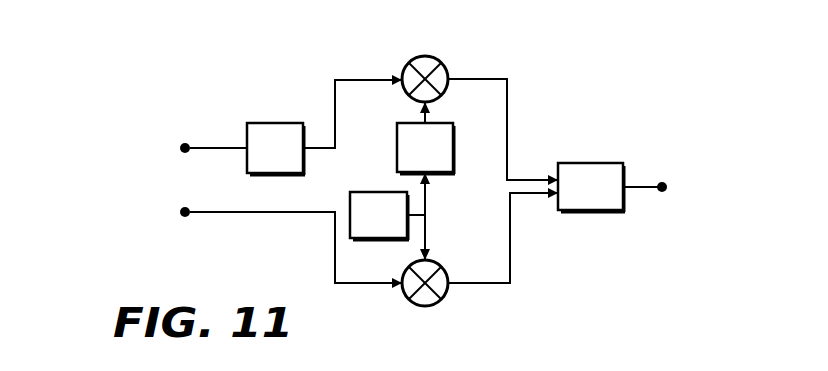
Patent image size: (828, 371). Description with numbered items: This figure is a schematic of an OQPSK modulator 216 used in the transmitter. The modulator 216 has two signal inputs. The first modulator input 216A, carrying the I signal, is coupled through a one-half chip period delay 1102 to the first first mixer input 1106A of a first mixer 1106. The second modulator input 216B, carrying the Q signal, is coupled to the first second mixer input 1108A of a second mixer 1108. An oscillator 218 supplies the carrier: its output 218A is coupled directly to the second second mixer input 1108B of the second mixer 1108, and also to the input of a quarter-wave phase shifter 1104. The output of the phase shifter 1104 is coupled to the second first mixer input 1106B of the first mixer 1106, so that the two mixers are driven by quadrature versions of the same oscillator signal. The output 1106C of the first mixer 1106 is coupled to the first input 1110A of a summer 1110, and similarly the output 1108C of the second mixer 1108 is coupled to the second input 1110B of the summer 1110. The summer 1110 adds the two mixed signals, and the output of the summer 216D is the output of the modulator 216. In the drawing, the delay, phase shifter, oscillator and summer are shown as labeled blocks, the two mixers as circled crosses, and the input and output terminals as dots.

The OQPSK modulator 216 is at (293, 279).
The first modulator input 216A is at (180, 146).
The second modulator input 216B is at (180, 214).
The output of the summer 216D is at (665, 182).
The one-half chip period delay 1102 is at (274, 122).
The π/2 phase shifter 1104 is at (454, 125).
The first mixer 1106 is at (437, 58).
The first first mixer input 1106A is at (400, 74).
The second first mixer input 1106B is at (418, 106).
The output of the first mixer 1106C is at (448, 69).
The second mixer 1108 is at (430, 306).
The first second mixer input 1108A is at (402, 290).
The second second mixer input 1108B is at (420, 261).
The output of the second mixer 1108C is at (446, 291).
The summer 1110 is at (583, 162).
The first input of the summer 1110A is at (556, 178).
The second input of the summer 1110B is at (556, 195).
The oscillator 218 is at (365, 192).
The output of the oscillator 218A is at (408, 210).